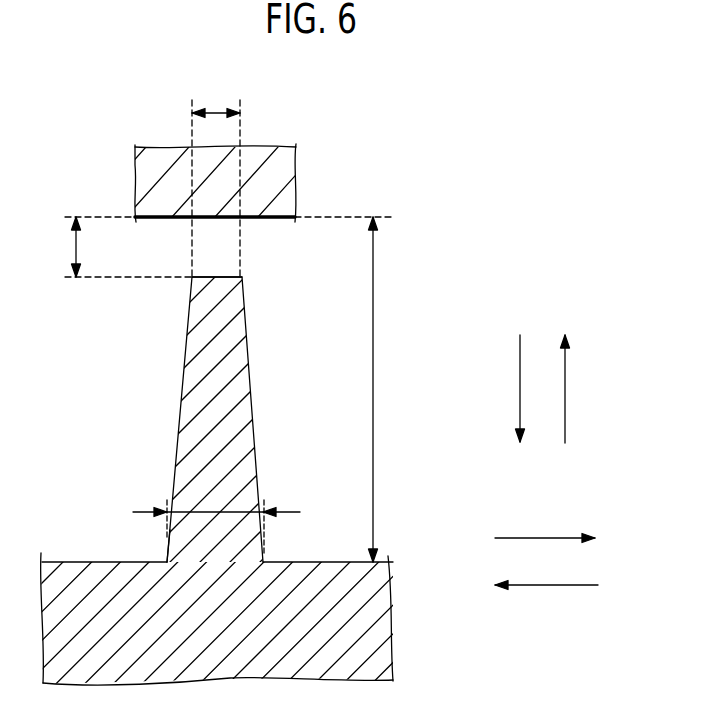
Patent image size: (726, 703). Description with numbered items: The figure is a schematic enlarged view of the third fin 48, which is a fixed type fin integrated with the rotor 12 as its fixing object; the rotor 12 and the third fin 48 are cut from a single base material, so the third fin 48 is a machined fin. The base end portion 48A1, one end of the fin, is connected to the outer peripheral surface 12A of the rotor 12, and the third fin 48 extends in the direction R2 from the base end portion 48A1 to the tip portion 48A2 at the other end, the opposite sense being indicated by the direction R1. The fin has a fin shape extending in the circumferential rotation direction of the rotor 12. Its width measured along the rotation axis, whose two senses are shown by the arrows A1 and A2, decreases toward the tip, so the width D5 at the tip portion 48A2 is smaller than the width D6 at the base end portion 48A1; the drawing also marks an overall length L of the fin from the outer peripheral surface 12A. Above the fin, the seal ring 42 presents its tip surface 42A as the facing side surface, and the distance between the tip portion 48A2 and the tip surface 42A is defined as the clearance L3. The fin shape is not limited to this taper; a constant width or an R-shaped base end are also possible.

The seal ring 42 is at (270, 183).
The tip surface of the seal ring 42A is at (278, 220).
The third fin 48 is at (274, 422).
The tip portion 48A2 is at (215, 277).
The base end portion 48A1 is at (197, 545).
The rotor 12 is at (380, 622).
The outer peripheral surface of the rotor 12A is at (336, 561).
The width in the tip portion D5 is at (216, 111).
The width in the base end portion D6 is at (215, 511).
The clearance L3 is at (74, 250).
The overall length dimension L is at (376, 387).
The direction R1 is at (536, 388).
The direction R2 is at (581, 389).
The direction A1 is at (561, 538).
The direction A2 is at (562, 585).